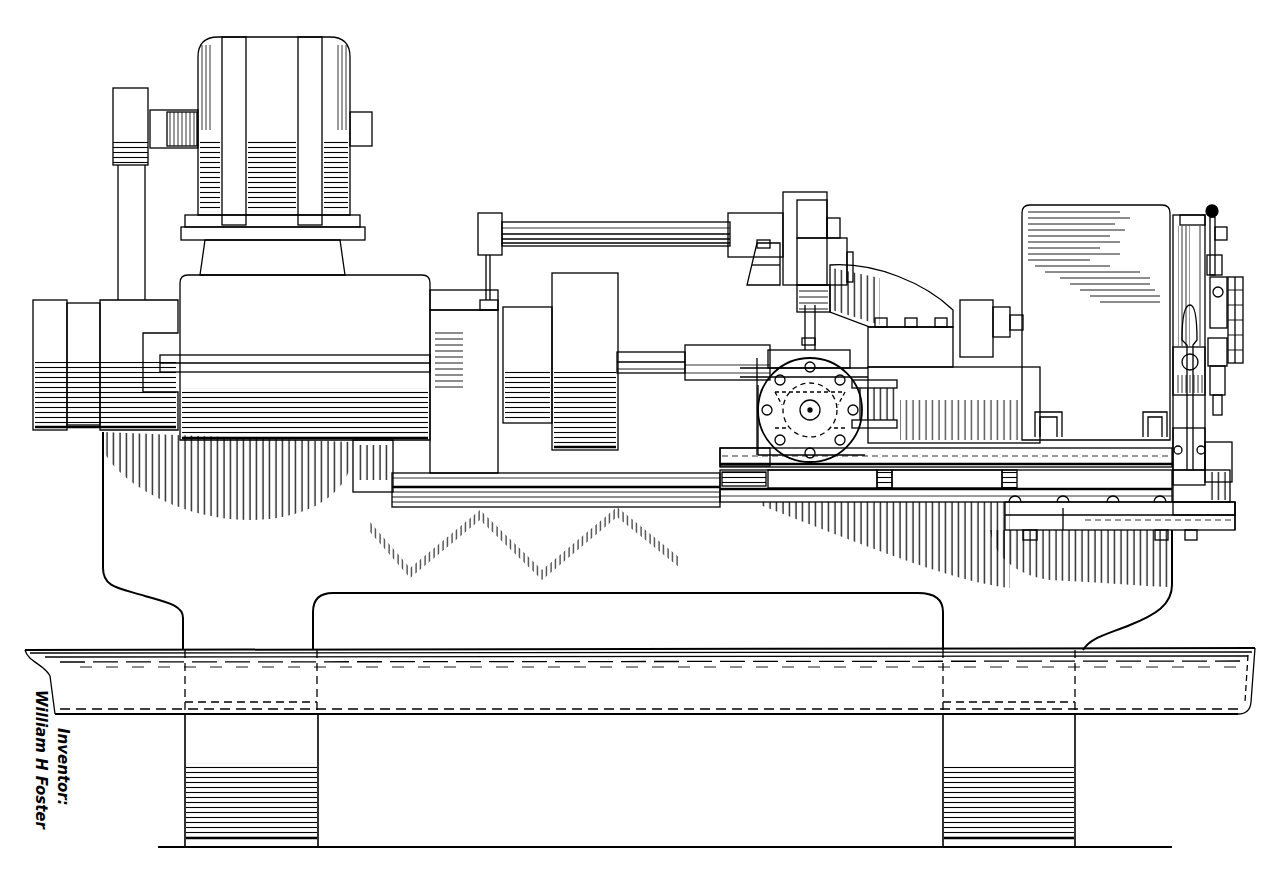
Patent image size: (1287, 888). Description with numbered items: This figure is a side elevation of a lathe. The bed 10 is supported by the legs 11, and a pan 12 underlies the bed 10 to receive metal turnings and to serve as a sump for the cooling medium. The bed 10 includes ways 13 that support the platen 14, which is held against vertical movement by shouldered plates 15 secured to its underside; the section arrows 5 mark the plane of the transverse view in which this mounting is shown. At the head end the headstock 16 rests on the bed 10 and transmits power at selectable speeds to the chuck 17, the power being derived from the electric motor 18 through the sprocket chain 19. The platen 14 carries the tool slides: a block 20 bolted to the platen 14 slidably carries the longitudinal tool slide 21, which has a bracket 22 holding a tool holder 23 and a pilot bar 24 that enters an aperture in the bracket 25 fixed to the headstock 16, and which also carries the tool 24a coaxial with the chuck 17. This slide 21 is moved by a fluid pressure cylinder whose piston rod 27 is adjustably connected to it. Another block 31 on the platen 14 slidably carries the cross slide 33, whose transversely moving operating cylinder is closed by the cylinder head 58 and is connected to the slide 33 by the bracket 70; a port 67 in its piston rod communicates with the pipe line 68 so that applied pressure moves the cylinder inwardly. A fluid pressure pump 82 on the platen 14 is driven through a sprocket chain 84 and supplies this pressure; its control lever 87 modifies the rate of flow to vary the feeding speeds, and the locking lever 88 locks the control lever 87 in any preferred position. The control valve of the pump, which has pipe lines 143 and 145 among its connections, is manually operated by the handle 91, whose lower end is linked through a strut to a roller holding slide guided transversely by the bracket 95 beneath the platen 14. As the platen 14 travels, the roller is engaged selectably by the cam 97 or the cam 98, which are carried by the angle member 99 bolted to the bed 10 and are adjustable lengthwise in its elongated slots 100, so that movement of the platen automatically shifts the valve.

The bed 10 is at (690, 578).
The legs 11 is at (306, 762).
The pan 12 is at (1147, 714).
The ways 13 is at (463, 461).
The platen 14 is at (720, 457).
The shouldered plates 15 is at (757, 495).
The headstock 16 is at (367, 298).
The chuck 17 is at (612, 316).
The electric motor 18 is at (338, 98).
The sprocket chain 19 is at (122, 197).
The block 20 is at (890, 405).
The longitudinal tool slide 21 is at (990, 368).
The bracket 22 is at (895, 295).
The tool holder 23 is at (760, 285).
The pilot bar 24 is at (654, 233).
The tool 24a is at (715, 355).
The bracket 25 is at (478, 229).
The piston rod 27 is at (1008, 305).
The block 31 is at (758, 432).
The cross slide 33 is at (758, 380).
The cylinder head 58 is at (758, 395).
The port 67 is at (905, 420).
The pipe line 68 is at (876, 398).
The bracket 70 is at (793, 355).
The fluid pressure pump 82 is at (1132, 222).
The sprocket chain 84 is at (1242, 287).
The control lever 87 is at (1216, 222).
The locking lever 88 is at (1222, 236).
The handle 91 is at (1185, 410).
The bracket 95 is at (1230, 496).
The cam 97 is at (1063, 512).
The cam 98 is at (1205, 531).
The angle member 99 is at (1236, 532).
The elongated slots 100 is at (1105, 525).
The pipe line 143 is at (1216, 372).
The pipe line 145 is at (1220, 415).
The section line 5 is at (783, 300).